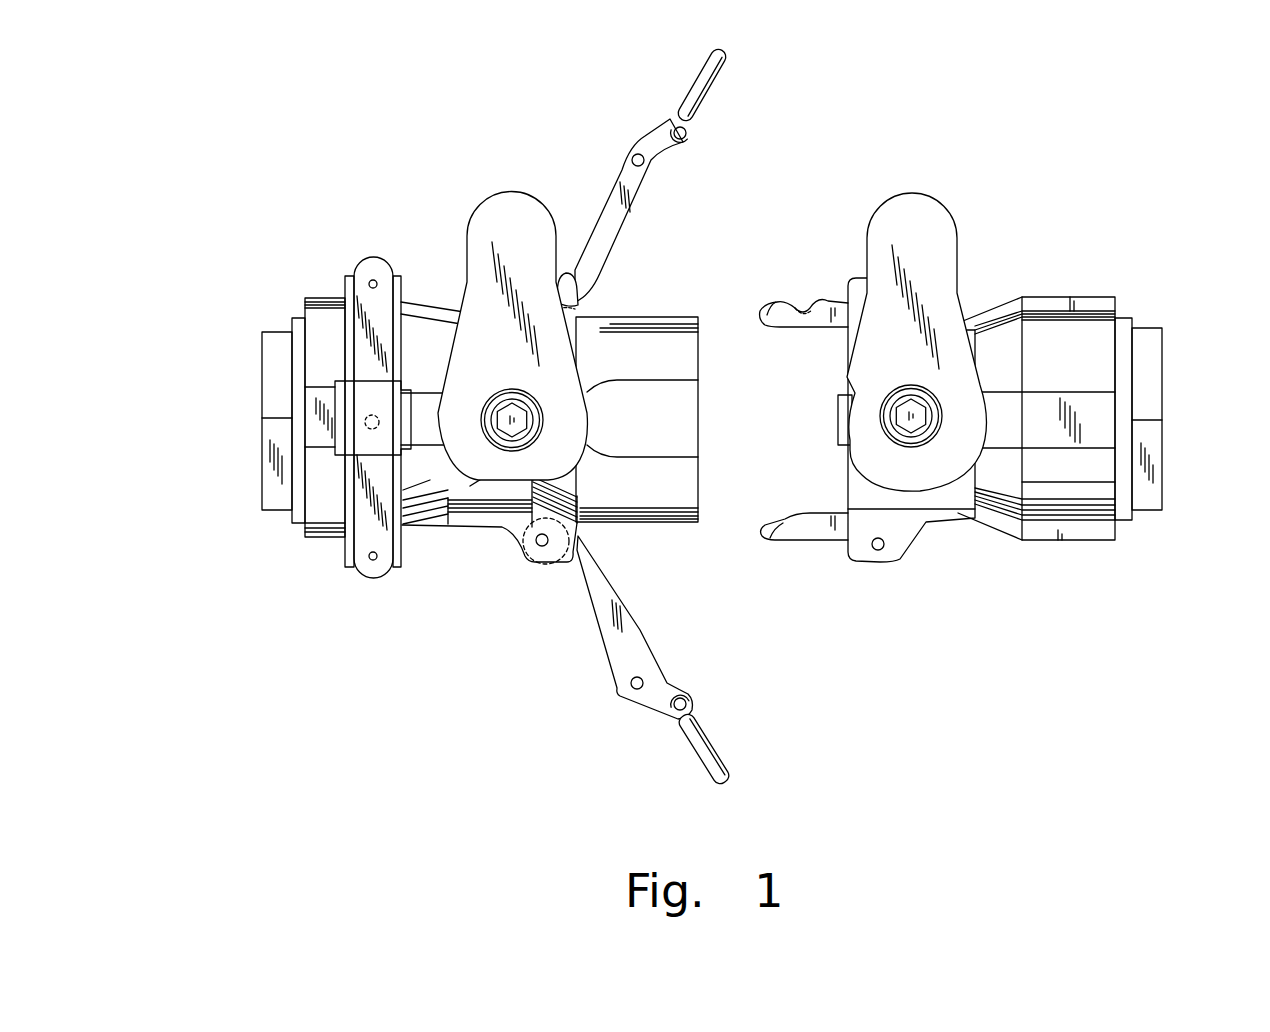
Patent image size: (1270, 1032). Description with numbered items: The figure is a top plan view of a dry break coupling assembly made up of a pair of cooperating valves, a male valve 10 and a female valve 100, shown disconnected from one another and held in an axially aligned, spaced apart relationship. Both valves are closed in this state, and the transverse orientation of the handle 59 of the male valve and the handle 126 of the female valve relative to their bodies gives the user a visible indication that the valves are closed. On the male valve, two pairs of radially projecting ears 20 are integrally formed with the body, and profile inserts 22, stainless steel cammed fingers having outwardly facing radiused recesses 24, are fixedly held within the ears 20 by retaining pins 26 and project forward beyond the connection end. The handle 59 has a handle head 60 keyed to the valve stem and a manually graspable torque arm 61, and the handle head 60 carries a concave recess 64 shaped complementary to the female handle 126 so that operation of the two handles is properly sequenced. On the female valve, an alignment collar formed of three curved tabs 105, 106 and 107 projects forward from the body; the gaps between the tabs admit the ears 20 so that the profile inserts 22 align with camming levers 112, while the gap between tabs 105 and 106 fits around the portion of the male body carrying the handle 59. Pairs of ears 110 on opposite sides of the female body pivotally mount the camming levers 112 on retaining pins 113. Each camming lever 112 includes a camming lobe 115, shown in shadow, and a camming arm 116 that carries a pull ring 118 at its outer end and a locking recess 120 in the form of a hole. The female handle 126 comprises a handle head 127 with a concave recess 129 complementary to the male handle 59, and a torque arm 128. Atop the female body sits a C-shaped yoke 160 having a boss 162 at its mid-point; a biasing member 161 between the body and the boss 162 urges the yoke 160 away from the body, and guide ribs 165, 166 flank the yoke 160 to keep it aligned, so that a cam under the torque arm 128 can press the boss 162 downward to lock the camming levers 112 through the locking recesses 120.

The male valve 10 is at (1158, 580).
The ears 20 is at (863, 278).
The profile inserts 22 is at (762, 303).
The radiused recesses 24 is at (812, 307).
The retaining pins 26 is at (876, 546).
The handle 59 is at (962, 229).
The handle head 60 is at (922, 470).
The torque arm 61 is at (913, 213).
The concave recess 64 is at (850, 448).
The female valve 100 is at (256, 170).
The curved tab 105 is at (683, 517).
The curved tab 106 is at (658, 333).
The curved tab 107 is at (663, 418).
The ears 110 is at (513, 530).
The camming levers 112 is at (638, 132).
The retaining pins 113 is at (562, 548).
The camming lobe 115 is at (560, 560).
The camming arm 116 is at (625, 652).
The pull rings 118 is at (733, 783).
The locking recesses 120 is at (645, 162).
The handle 126 is at (490, 193).
The handle head 127 is at (487, 452).
The torque arm 128 is at (518, 197).
The concave recess 129 is at (519, 495).
The yoke 160 is at (365, 297).
The biasing member 161 is at (372, 413).
The boss 162 is at (362, 433).
The guide rib 165 is at (420, 345).
The guide rib 166 is at (340, 337).